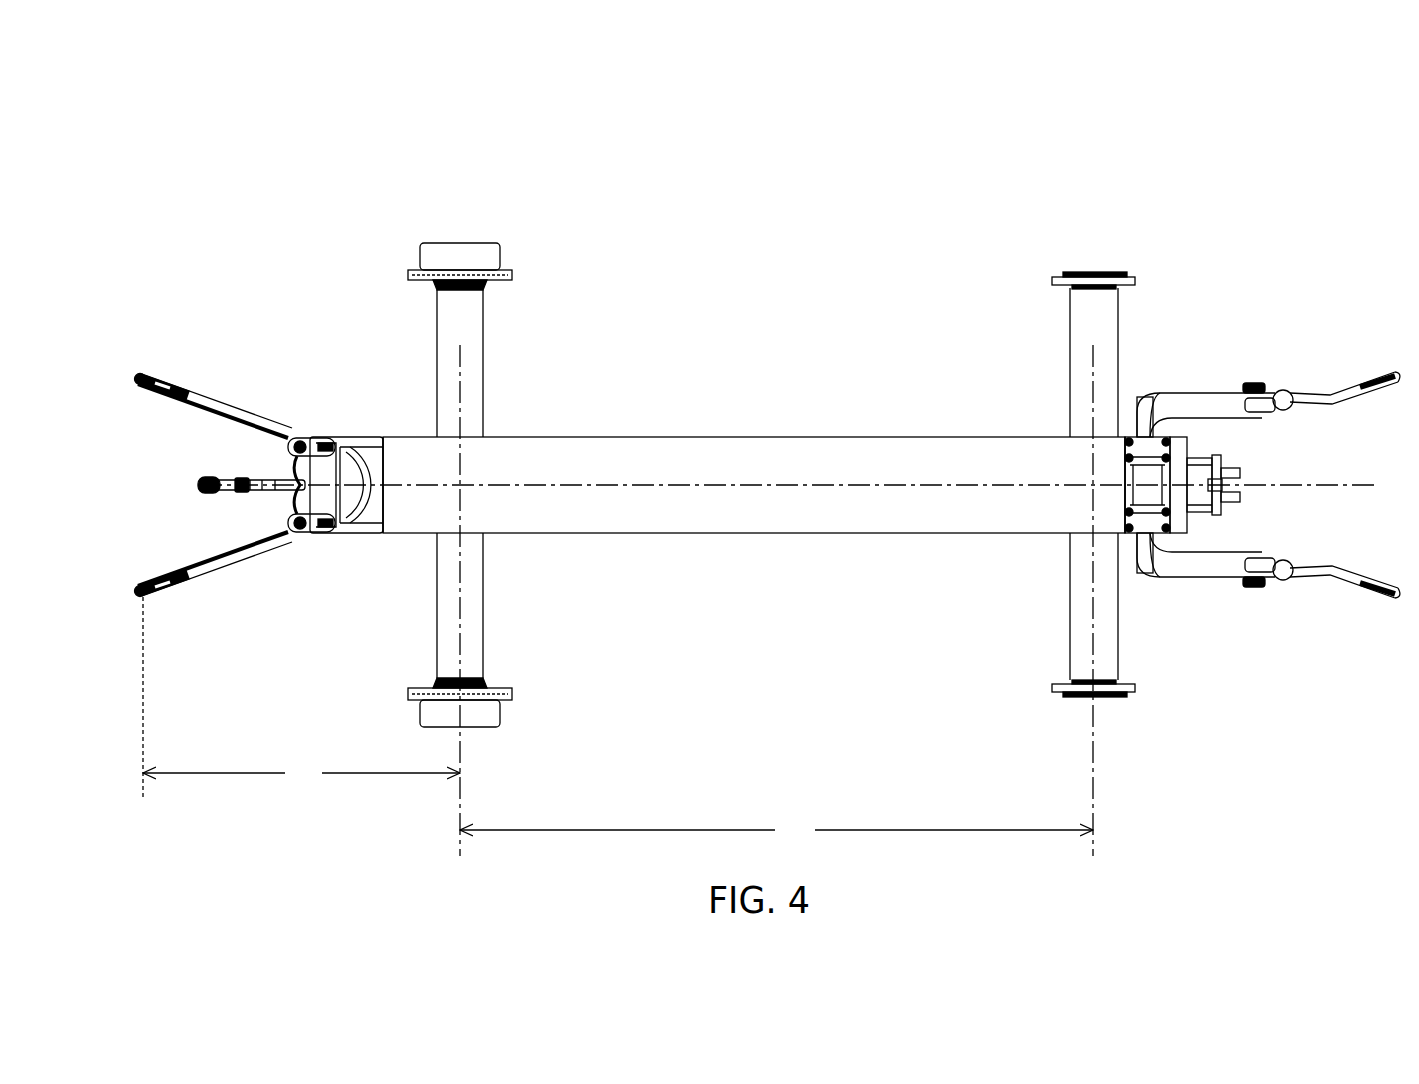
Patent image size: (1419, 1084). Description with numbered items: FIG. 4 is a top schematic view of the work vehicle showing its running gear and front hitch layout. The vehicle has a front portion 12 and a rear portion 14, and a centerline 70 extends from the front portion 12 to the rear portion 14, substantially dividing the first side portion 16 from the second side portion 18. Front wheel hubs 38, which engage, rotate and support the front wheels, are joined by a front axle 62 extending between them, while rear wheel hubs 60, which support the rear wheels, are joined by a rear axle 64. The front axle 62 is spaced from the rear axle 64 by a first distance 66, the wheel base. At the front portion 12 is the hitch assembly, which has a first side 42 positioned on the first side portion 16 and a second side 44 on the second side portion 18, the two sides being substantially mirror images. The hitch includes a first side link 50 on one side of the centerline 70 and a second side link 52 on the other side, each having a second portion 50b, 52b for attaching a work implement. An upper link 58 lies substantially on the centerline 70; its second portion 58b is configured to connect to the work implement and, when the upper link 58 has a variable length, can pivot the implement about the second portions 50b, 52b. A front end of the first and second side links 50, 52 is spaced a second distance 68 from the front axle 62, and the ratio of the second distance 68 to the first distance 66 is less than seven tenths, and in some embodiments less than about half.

The front portion 12 is at (530, 368).
The rear portion 14 is at (970, 348).
The first side portion 16 is at (763, 180).
The second side portion 18 is at (727, 640).
The front wheel hubs 38 is at (490, 235).
The first side 42 is at (238, 441).
The second side 44 is at (180, 645).
The first side link 50 is at (198, 367).
The second portion 50b is at (128, 375).
The second side link 52 is at (193, 597).
The second portion 52b is at (127, 594).
The upper link 58 is at (200, 492).
The second portion 58b is at (176, 474).
The rear wheel hubs 60 is at (1108, 257).
The front axle 62 is at (472, 620).
The rear axle 64 is at (1087, 638).
The first distance 66 is at (776, 831).
The second distance 68 is at (301, 697).
The centerline 70 is at (1282, 480).